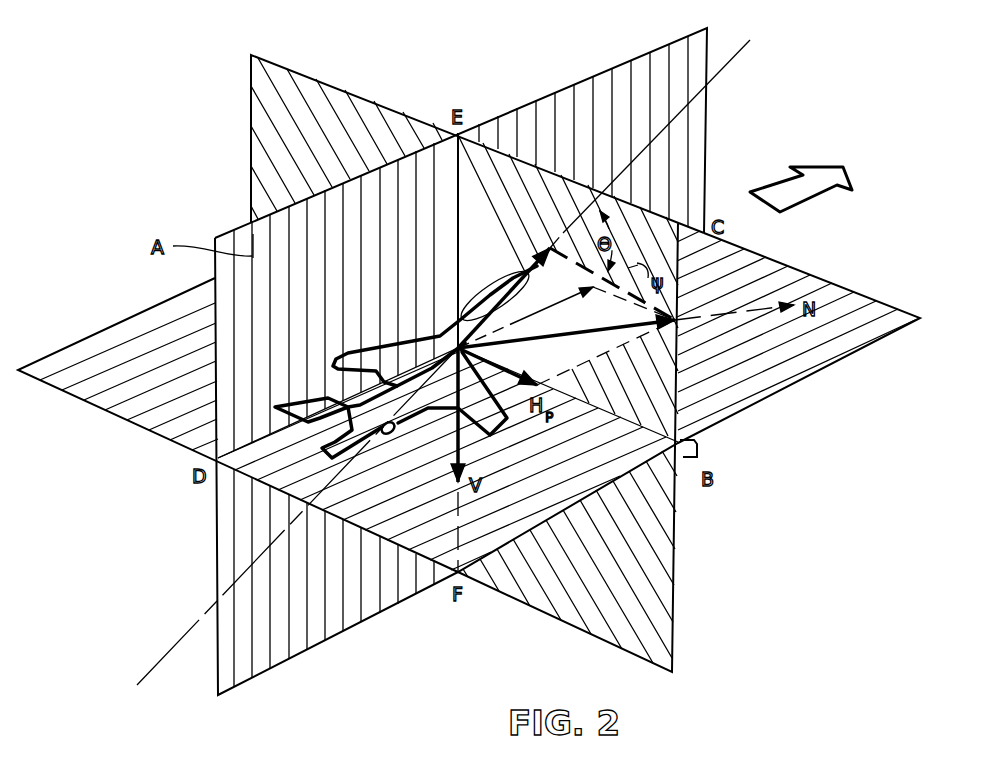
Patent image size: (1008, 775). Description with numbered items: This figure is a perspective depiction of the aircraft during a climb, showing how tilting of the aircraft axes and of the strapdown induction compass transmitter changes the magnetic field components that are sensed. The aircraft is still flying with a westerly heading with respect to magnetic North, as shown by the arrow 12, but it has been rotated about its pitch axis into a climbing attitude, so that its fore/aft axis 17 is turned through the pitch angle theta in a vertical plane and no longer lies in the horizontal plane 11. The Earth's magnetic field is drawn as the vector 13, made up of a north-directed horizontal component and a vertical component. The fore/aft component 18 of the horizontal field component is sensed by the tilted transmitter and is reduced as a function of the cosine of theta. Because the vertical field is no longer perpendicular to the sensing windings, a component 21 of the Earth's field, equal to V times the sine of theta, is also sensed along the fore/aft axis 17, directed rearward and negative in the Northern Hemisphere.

The horizontal plane 11 is at (437, 567).
The arrow 12 is at (772, 188).
The Earth's magnetic field vector 13 is at (605, 333).
The fore/aft axis 17 is at (285, 541).
The fore/aft component of the horizontal field component 18 is at (556, 303).
The component of the Earth's field 21 is at (418, 340).